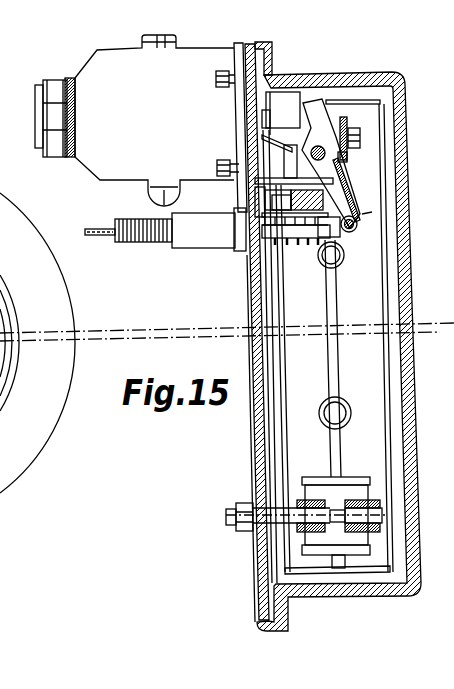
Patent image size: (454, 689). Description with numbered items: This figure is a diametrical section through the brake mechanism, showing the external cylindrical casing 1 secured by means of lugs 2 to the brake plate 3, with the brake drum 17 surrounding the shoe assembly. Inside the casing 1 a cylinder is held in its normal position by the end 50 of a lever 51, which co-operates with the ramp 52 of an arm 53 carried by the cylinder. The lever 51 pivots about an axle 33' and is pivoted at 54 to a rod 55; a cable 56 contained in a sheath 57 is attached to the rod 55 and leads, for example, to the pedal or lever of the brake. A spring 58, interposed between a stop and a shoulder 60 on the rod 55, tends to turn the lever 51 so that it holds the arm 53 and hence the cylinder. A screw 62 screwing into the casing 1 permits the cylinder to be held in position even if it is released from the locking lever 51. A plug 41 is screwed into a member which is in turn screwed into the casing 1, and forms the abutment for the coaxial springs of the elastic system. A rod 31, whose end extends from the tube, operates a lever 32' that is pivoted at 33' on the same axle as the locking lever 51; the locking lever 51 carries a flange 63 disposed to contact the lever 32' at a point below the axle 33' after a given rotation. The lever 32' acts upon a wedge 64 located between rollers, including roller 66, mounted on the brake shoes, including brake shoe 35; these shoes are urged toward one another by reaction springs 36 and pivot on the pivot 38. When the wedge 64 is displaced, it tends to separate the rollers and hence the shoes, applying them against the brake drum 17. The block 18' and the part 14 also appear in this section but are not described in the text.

The external cylindrical casing 1 is at (118, 49).
The screw 62 is at (172, 44).
The plug 41 is at (36, 124).
The lugs 2 is at (238, 180).
The cable 56 is at (100, 243).
The sheath 57 is at (142, 243).
The spring 58 is at (272, 238).
The brake drum 17 is at (367, 75).
The brake plate 3 is at (260, 420).
The block 18' is at (294, 87).
The ramp 52 is at (262, 120).
The arm 53 is at (262, 137).
The end of lever 50 is at (297, 148).
The rod 31 is at (315, 117).
The lever 32' is at (353, 130).
The axle 33' is at (356, 164).
The flange 63 is at (355, 200).
The pin 14 is at (370, 210).
The pivot 54 is at (367, 218).
The lever 51 is at (347, 232).
The roller 66 is at (282, 204).
The wedge 64 is at (312, 204).
The rod 55 is at (297, 231).
The shoulder 60 is at (318, 238).
The reaction springs 36 is at (350, 268).
The brake shoe 35 is at (287, 345).
The pivot 38 is at (272, 517).